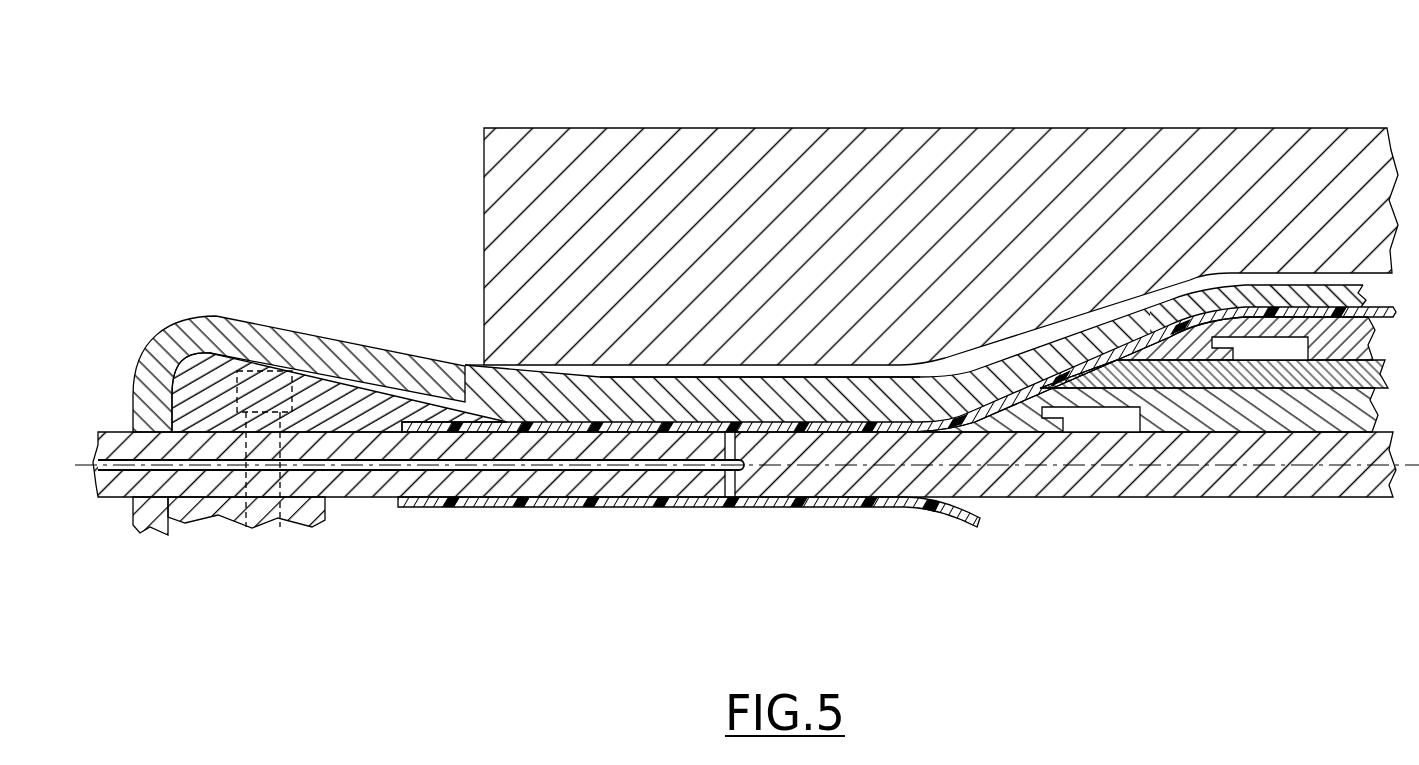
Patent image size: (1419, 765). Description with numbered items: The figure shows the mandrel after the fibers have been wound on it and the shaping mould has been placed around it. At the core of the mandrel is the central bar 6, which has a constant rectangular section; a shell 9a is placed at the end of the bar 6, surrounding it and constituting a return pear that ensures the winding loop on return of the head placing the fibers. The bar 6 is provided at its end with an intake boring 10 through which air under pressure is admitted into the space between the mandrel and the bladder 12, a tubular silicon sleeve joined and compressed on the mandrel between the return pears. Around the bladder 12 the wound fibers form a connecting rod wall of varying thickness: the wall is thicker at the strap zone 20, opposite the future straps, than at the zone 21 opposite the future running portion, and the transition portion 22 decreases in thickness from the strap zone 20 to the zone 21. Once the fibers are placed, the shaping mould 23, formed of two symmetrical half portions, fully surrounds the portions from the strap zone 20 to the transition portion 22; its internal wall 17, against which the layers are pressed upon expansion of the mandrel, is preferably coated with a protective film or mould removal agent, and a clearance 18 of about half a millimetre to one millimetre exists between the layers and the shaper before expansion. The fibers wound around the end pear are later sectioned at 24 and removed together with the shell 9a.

The central bar 6 is at (350, 483).
The shell 9a is at (330, 402).
The intake boring 10 is at (504, 465).
The bladder 12 is at (780, 420).
The internal wall 17 is at (835, 368).
The clearance 18 is at (631, 370).
The strap zone 20 is at (672, 398).
The running portion zone 21 is at (1290, 295).
The transition portion 22 is at (1017, 365).
The shaping mould 23 is at (482, 232).
The sectioning zone 24 is at (452, 372).